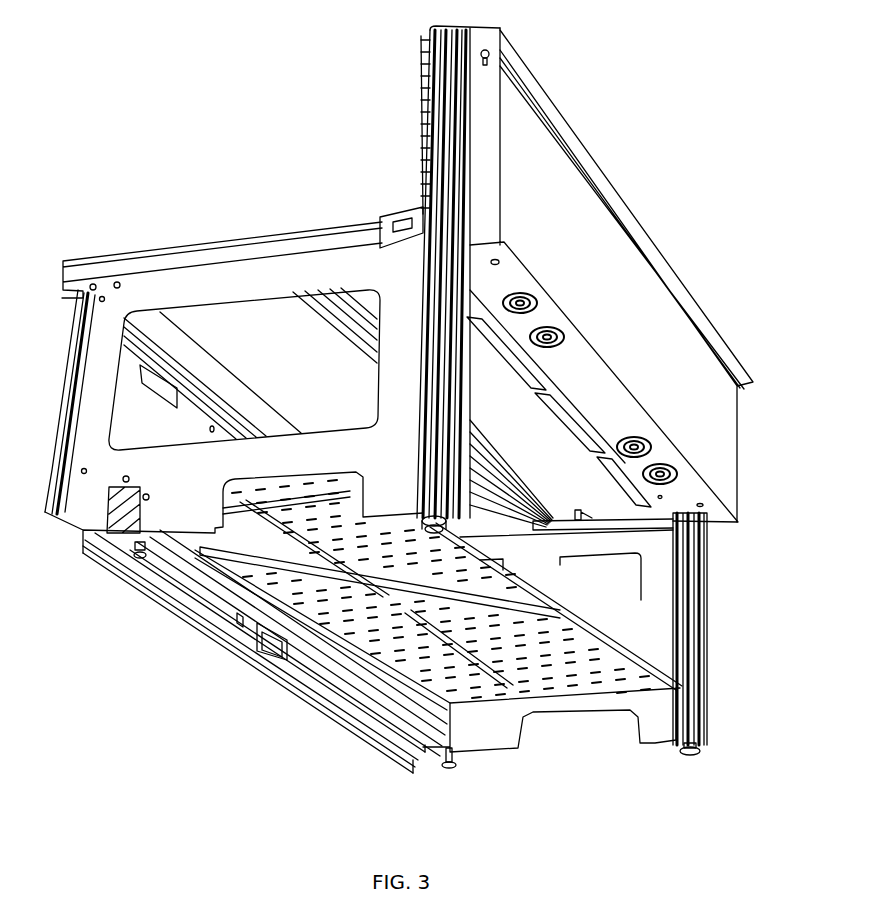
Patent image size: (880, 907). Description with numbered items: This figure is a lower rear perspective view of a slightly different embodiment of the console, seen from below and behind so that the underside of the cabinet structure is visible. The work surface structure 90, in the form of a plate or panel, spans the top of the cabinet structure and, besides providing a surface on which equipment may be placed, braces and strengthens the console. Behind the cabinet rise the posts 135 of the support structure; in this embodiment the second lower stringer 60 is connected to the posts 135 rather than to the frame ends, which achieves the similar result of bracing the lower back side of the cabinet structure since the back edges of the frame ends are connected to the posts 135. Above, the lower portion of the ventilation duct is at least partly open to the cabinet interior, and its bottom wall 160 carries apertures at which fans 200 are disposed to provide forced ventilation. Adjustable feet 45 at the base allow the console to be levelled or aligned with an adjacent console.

The feet 45 is at (436, 530).
The second lower stringer 60 is at (660, 648).
The work surface structure 90 is at (203, 246).
The posts 135 is at (418, 443).
The bottom wall 160 is at (690, 501).
The fans 200 is at (690, 471).